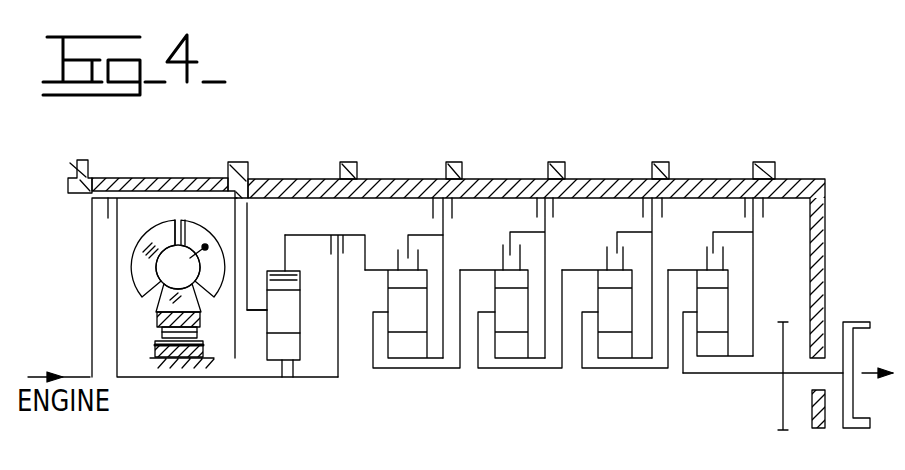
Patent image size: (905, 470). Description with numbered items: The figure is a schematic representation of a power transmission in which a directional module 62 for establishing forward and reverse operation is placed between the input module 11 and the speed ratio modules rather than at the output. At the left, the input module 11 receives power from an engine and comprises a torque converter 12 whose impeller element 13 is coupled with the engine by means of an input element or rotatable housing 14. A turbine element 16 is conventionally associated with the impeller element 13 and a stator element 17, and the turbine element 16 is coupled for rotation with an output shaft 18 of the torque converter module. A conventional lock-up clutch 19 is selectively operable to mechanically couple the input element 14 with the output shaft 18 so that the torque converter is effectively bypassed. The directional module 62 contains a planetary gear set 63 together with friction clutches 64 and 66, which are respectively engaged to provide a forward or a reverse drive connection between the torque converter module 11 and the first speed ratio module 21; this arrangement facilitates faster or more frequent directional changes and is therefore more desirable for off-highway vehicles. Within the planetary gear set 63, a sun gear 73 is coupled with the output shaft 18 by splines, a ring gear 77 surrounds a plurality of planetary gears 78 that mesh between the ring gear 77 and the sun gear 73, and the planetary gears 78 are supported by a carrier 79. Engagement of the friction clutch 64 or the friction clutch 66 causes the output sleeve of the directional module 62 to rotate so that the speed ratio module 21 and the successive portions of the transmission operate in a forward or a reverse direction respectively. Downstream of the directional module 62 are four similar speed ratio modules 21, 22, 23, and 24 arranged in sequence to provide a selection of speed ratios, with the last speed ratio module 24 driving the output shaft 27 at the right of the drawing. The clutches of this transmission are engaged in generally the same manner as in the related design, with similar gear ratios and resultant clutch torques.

The input module 11 is at (161, 172).
The directional module 62 is at (268, 172).
The first speed ratio module 21 is at (378, 172).
The second speed ratio module 22 is at (478, 172).
The third speed ratio module 23 is at (584, 172).
The fourth speed ratio module 24 is at (690, 172).
The lock-up clutch 19 is at (131, 206).
The input element 14 is at (190, 208).
The torque converter 12 is at (131, 280).
The impeller element 13 is at (178, 267).
The turbine element 16 is at (146, 292).
The stator element 17 is at (187, 302).
The output shaft of the torque converter module 18 is at (148, 378).
The friction clutch 66 is at (250, 206).
The friction clutch 64 is at (423, 250).
The ring gear 77 is at (312, 268).
The carrier 79 is at (255, 311).
The planetary gears 78 is at (277, 318).
The sun gear 73 is at (292, 350).
The planetary gear set 63 is at (325, 326).
The output shaft 27 is at (752, 375).